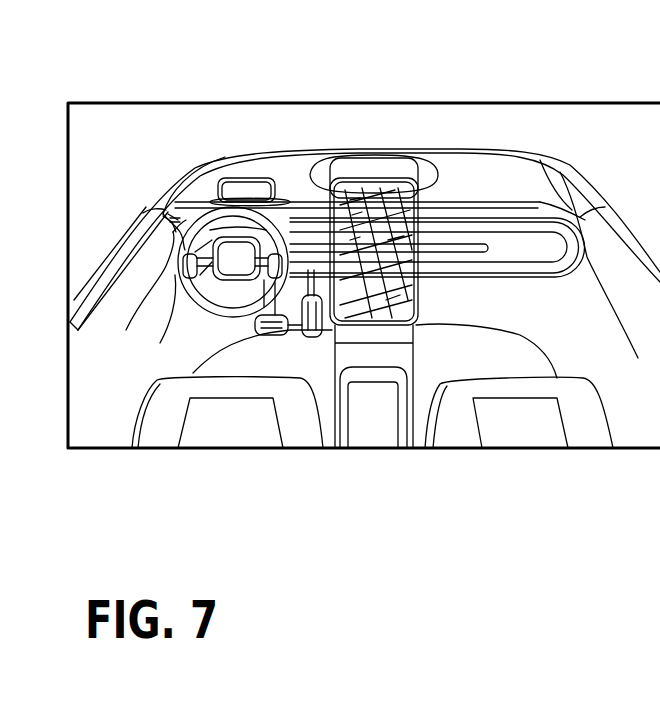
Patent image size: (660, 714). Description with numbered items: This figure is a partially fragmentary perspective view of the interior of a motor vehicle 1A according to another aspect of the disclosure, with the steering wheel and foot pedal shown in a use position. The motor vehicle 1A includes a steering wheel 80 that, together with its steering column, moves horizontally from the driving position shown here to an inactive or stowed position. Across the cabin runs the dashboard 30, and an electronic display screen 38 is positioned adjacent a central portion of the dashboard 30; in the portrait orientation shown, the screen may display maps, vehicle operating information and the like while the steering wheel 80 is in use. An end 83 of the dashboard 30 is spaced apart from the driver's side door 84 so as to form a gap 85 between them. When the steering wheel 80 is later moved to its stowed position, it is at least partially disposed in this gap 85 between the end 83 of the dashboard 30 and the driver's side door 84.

The motor vehicle 1A is at (624, 162).
The dashboard 30 is at (485, 213).
The electronic display screen 38 is at (382, 193).
The steering wheel 80 is at (231, 196).
The end of dashboard 83 is at (162, 212).
The driver's side door 84 is at (129, 262).
The gap 85 is at (170, 218).